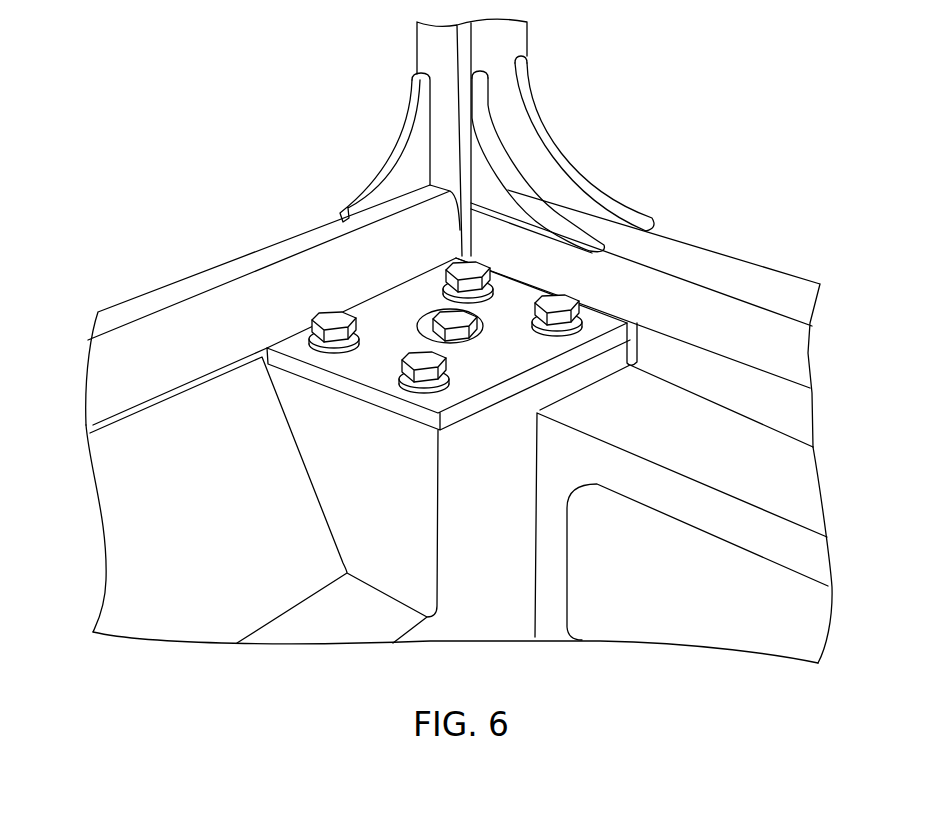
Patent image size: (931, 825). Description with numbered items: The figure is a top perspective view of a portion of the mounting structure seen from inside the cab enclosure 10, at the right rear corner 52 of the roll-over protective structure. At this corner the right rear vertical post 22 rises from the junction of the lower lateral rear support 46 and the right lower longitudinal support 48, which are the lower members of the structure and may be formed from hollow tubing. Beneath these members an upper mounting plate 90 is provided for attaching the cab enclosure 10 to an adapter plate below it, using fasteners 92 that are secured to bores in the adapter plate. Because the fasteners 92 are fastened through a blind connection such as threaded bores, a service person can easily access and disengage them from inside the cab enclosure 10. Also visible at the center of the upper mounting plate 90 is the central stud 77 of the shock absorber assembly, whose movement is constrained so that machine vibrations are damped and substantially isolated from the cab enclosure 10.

The cab enclosure 10 is at (128, 537).
The right rear vertical post 22 is at (505, 73).
The lower lateral rear support 46 is at (738, 317).
The right lower longitudinal support 48 is at (210, 299).
The right rear corner 52 is at (301, 155).
The central stud 77 is at (474, 309).
The upper mounting plate 90 is at (590, 340).
The fasteners 92 is at (566, 293).